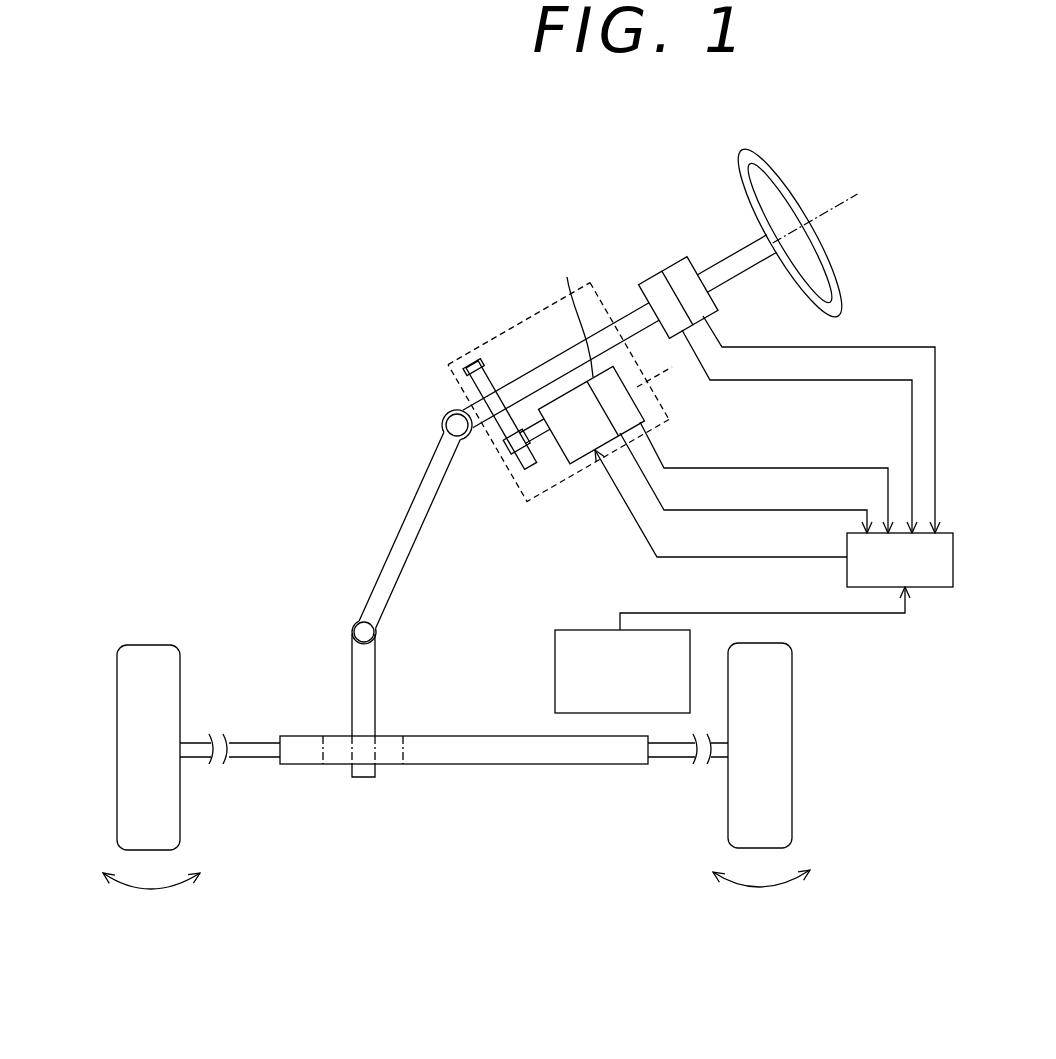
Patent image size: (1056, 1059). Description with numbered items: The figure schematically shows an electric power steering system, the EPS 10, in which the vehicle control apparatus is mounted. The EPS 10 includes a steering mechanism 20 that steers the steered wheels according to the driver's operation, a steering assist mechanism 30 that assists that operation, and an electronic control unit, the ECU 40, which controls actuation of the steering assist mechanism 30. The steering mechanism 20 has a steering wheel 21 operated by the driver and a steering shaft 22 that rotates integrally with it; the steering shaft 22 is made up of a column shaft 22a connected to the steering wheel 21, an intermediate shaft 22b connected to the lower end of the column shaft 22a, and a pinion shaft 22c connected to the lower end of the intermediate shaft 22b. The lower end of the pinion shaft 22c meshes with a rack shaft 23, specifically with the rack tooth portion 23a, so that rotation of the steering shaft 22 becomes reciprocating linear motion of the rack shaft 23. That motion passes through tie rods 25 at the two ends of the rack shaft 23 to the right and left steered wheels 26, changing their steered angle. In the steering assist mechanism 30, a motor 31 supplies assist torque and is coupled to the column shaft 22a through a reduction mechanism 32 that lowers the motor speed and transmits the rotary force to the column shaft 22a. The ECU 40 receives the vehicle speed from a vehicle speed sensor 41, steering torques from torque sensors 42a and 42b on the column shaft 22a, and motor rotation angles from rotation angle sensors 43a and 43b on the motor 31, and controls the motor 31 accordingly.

The electric power steering system (EPS) 10 is at (998, 186).
The steering mechanism 20 is at (844, 265).
The steering wheel 21 is at (772, 162).
The steering shaft 22 is at (350, 420).
The column shaft 22a is at (444, 416).
The intermediate shaft 22b is at (409, 508).
The pinion shaft 22c is at (352, 648).
The rack shaft 23 is at (478, 736).
The rack tooth portion 23a is at (392, 736).
The tie rod 25 is at (254, 758).
The steered wheel 26 is at (117, 805).
The steering assist mechanism 30 is at (525, 318).
The motor 31 is at (566, 458).
The reduction mechanism 32 is at (512, 466).
The electronic control unit (ECU) 40 is at (955, 560).
The vehicle speed sensor 41 is at (578, 630).
The torque sensor 42a is at (650, 278).
The torque sensor 42b is at (668, 267).
The rotation angle sensor 43a is at (567, 311).
The rotation angle sensor 43b is at (650, 407).